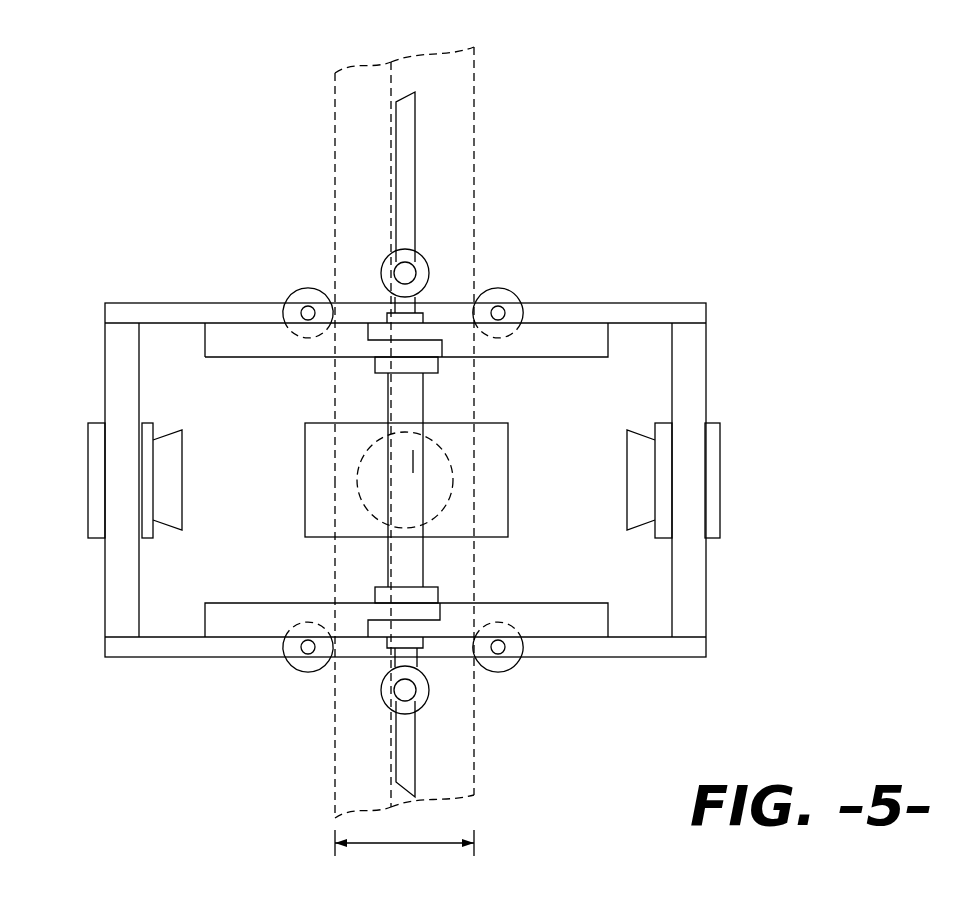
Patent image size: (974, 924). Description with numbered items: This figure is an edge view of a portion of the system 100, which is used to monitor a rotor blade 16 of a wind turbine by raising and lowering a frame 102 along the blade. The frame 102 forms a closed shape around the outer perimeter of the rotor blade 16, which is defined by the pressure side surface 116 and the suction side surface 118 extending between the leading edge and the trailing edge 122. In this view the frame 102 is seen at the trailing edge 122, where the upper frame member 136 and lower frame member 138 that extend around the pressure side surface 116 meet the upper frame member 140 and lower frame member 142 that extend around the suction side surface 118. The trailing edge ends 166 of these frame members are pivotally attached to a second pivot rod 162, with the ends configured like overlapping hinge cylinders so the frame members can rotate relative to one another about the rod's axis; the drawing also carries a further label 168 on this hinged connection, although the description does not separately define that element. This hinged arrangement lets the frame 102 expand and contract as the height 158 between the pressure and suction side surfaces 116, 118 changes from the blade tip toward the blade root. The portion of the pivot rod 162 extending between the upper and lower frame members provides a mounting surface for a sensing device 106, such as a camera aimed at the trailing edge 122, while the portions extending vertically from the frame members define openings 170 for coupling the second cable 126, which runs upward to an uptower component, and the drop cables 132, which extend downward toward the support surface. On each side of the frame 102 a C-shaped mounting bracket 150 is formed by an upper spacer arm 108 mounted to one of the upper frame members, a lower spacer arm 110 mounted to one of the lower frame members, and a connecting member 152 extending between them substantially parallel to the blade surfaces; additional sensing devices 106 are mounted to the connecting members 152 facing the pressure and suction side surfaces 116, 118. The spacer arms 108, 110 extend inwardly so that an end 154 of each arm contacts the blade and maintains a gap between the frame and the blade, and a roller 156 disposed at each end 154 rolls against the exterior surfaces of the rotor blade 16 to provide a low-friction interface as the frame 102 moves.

The rotor blade 16 is at (482, 85).
The system 100 is at (772, 170).
The frame 102 is at (232, 363).
The sensing devices 106 is at (88, 482).
The upper spacer arm 108 is at (225, 303).
The lower spacer arm 110 is at (162, 645).
The pressure side surface 116 is at (335, 152).
The suction side surface 118 is at (475, 117).
The trailing edge 122 is at (335, 97).
The second cable 126 is at (415, 132).
The drop cables 132 is at (417, 757).
The upper frame member 136 is at (263, 360).
The lower frame member 138 is at (258, 603).
The upper frame member 140 is at (570, 360).
The lower frame member 142 is at (572, 603).
The mounting bracket 150 is at (98, 368).
The connecting member 152 is at (118, 592).
The end 154 is at (303, 288).
The roller 156 is at (322, 290).
The height 158 is at (403, 843).
The second pivot rod 162 is at (508, 512).
The trailing edge ends 166 is at (353, 360).
The blade holders 168 is at (432, 335).
The openings 170 is at (390, 262).